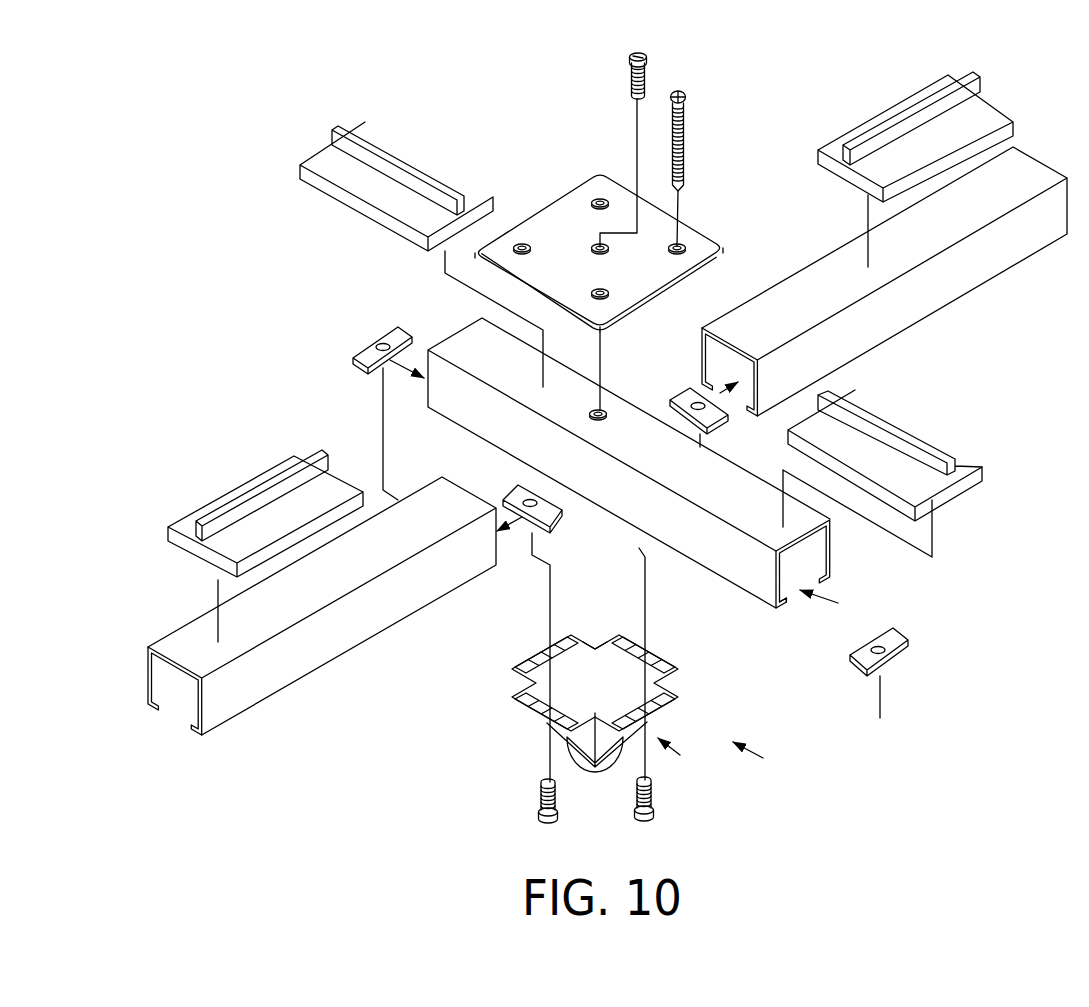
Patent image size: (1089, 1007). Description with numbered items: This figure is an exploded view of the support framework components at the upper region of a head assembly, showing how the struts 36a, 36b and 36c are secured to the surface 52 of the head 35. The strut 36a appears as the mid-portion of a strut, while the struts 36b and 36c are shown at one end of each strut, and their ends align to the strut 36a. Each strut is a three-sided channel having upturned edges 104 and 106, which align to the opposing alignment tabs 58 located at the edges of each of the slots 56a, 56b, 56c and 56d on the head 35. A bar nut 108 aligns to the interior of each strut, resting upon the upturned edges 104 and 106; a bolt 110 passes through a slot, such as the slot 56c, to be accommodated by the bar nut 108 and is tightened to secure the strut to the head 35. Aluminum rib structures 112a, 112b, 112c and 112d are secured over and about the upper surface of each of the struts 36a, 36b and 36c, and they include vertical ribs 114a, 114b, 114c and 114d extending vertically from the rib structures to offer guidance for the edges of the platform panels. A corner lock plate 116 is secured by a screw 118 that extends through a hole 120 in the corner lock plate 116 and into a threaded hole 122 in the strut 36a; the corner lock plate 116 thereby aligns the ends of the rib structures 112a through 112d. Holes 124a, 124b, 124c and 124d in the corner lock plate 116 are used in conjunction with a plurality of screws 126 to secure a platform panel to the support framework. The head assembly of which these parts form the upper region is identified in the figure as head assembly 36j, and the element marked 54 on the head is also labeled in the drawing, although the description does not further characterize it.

The head 35 is at (685, 754).
The strut 36a is at (652, 520).
The strut 36b is at (933, 295).
The strut 36c is at (363, 633).
The joint assembly 36j is at (768, 759).
The surface 52 is at (583, 694).
The hanging tab 54 is at (620, 757).
The slot 56a is at (547, 652).
The slot 56b is at (647, 653).
The slot 56c is at (652, 718).
The slot 56d is at (543, 720).
The alignment tab 58 is at (627, 635).
The upturned edge 104 is at (795, 594).
The upturned edge 106 is at (838, 603).
The bar nut 108 is at (900, 636).
The bolt 110 is at (653, 795).
The rib structure 112a is at (940, 445).
The rib structure 112b is at (993, 110).
The rib structure 112c is at (412, 153).
The rib structure 112d is at (225, 502).
The vertical rib 114a is at (877, 437).
The vertical rib 114b is at (927, 120).
The vertical rib 114c is at (367, 157).
The vertical rib 114d is at (288, 488).
The corner lock plate 116 is at (690, 233).
The screw 118 is at (647, 73).
The hole 120 is at (602, 251).
The threaded hole 122 is at (604, 410).
The hole 124a is at (692, 244).
The hole 124b is at (598, 198).
The hole 124c is at (523, 243).
The hole 124d is at (599, 290).
The screw 126 is at (683, 127).